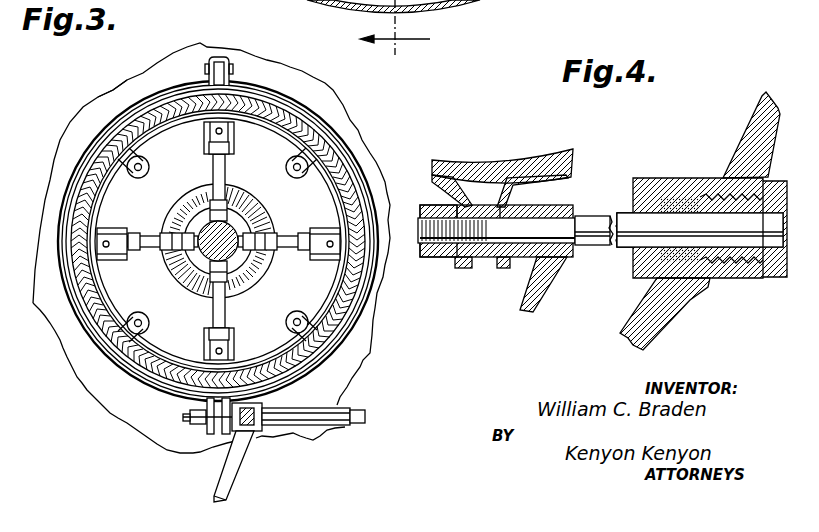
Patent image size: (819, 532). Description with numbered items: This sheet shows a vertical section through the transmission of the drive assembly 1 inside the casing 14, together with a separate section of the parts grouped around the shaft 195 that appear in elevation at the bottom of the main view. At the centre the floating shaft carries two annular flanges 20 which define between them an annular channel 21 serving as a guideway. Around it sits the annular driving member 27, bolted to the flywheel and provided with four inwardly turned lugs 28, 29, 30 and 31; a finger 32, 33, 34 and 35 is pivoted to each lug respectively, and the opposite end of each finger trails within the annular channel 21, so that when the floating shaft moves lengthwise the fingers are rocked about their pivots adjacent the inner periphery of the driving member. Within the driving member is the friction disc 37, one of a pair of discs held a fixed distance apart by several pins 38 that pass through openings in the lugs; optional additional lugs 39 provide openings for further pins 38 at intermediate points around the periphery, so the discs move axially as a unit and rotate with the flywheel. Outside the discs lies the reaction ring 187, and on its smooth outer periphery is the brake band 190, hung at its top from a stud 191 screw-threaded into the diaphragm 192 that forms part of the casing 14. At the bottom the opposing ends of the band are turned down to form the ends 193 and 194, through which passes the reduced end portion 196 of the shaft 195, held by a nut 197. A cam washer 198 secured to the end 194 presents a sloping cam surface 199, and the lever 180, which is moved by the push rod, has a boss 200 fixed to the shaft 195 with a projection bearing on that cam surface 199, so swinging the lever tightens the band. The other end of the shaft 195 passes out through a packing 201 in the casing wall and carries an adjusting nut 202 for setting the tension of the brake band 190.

In FIG. 4, the drive assembly 1 is at (393, 27).
In FIG. 4, the casing 14 is at (757, 124).
In FIG. 3, the annular flanges 20 is at (245, 215).
In FIG. 3, the annular channel 21 is at (203, 257).
In FIG. 3, the annular driving member 27 is at (335, 115).
In FIG. 3, the lug 28 is at (232, 130).
In FIG. 3, the lug 29 is at (99, 258).
In FIG. 3, the lug 30 is at (160, 388).
In FIG. 3, the lug 31 is at (350, 277).
In FIG. 3, the finger 32 is at (220, 185).
In FIG. 3, the finger 33 is at (172, 234).
In FIG. 3, the finger 34 is at (212, 303).
In FIG. 3, the finger 35 is at (300, 278).
In FIG. 3, the friction disc 37 is at (310, 313).
In FIG. 3, the pins 38 is at (200, 107).
In FIG. 3, the additional lugs 39 is at (300, 168).
In FIG. 3, the lever 180 is at (215, 495).
In FIG. 3, the reaction ring 187 is at (333, 97).
In FIG. 4, the reaction ring 187 is at (521, 164).
In FIG. 3, the brake band 190 is at (350, 147).
In FIG. 4, the brake band 190 is at (567, 172).
In FIG. 3, the stud 191 is at (226, 58).
In FIG. 3, the diaphragm 192 is at (115, 88).
In FIG. 3, the end of brake band 193 is at (208, 437).
In FIG. 4, the end of brake band 193 is at (462, 269).
In FIG. 3, the end of brake band 194 is at (224, 440).
In FIG. 4, the end of brake band 194 is at (505, 268).
In FIG. 3, the shaft 195 is at (365, 427).
In FIG. 4, the shaft 195 is at (592, 247).
In FIG. 4, the reduced end portion 196 is at (487, 246).
In FIG. 3, the nut 197 is at (192, 418).
In FIG. 4, the nut 197 is at (427, 207).
In FIG. 3, the cam washer 198 is at (246, 432).
In FIG. 4, the cam washer 198 is at (520, 262).
In FIG. 3, the cam surface 199 is at (283, 407).
In FIG. 4, the cam surface 199 is at (523, 203).
In FIG. 3, the boss 200 is at (270, 428).
In FIG. 4, the packing 201 is at (670, 197).
In FIG. 4, the adjusting nut 202 is at (777, 278).